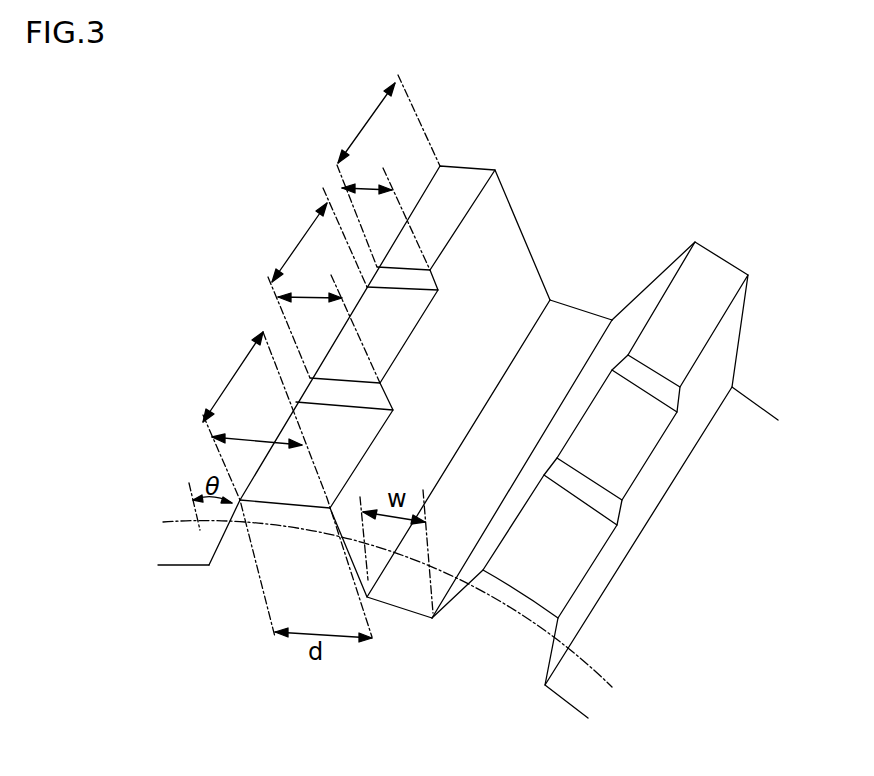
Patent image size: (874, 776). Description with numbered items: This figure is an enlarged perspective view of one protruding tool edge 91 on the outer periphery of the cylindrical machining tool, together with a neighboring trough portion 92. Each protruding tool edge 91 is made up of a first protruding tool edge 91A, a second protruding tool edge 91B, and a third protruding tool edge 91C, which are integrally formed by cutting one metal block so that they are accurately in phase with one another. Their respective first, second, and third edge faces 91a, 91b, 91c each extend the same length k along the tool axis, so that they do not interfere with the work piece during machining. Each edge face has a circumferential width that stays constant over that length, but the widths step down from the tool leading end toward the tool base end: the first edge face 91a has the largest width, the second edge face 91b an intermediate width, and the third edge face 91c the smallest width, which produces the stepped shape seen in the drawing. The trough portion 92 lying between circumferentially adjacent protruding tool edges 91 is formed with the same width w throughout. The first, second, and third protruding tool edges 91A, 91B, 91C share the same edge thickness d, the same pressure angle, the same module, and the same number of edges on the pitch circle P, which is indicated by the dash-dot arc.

The protruding tool edge 91 is at (414, 276).
The first edge face 91a is at (345, 438).
The second edge face 91b is at (387, 300).
The third edge face 91c is at (452, 180).
The first protruding tool edge 91A is at (370, 468).
The second protruding tool edge 91B is at (420, 348).
The third protruding tool edge 91C is at (495, 225).
The trough portion 92 is at (580, 347).
The pitch circle P is at (628, 647).